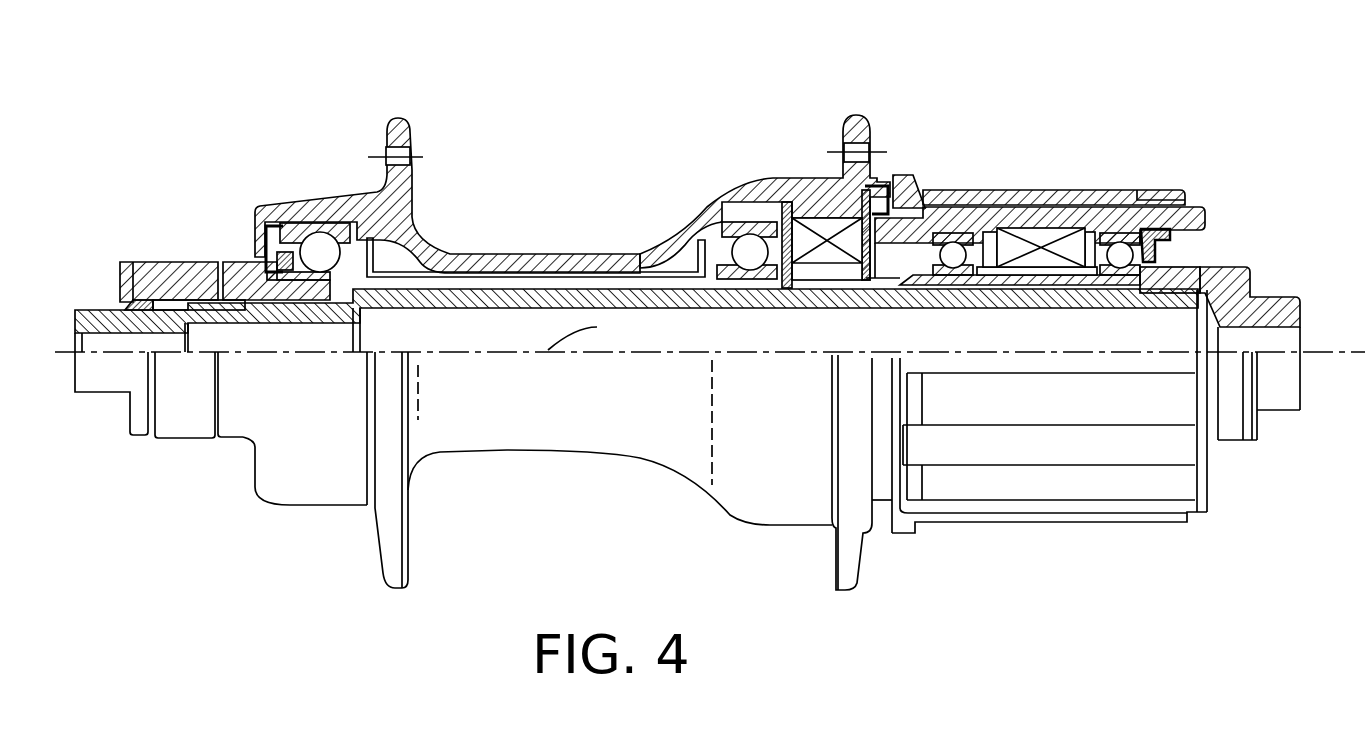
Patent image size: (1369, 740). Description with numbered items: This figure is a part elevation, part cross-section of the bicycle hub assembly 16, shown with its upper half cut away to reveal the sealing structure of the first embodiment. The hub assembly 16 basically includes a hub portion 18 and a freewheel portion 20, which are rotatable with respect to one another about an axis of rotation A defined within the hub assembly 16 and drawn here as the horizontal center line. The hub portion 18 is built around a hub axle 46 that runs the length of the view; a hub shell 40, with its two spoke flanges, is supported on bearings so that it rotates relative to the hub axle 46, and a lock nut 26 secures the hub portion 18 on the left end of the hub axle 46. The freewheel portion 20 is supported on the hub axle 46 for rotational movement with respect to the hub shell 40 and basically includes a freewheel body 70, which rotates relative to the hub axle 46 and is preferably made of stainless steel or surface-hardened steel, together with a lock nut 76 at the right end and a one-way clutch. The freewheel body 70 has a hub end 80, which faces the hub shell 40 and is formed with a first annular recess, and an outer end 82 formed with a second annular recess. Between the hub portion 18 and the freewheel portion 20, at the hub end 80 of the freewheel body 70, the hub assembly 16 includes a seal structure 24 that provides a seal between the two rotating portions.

The hub assembly 16 is at (650, 104).
The hub portion 18 is at (537, 252).
The freewheel portion 20 is at (1076, 315).
The seal structure 24 is at (893, 160).
The lock nut 26 is at (172, 260).
The hub shell 40 is at (767, 187).
The hub axle 46 is at (790, 300).
The freewheel body 70 is at (1100, 190).
The lock nut 76 is at (1280, 307).
The hub end 80 is at (930, 210).
The outer end 82 is at (1205, 232).